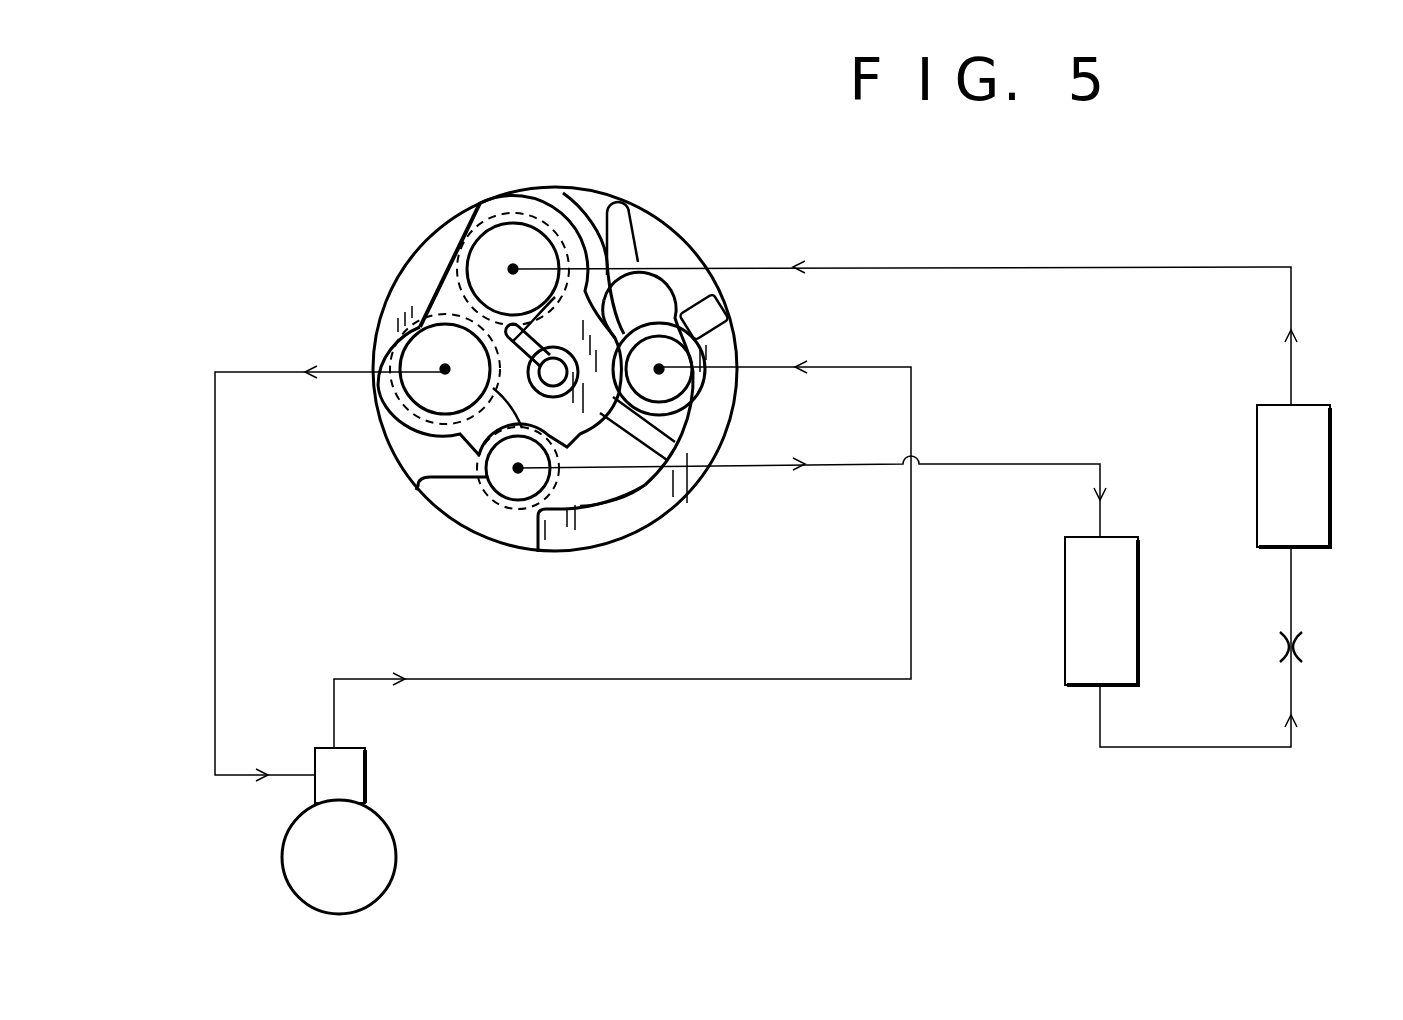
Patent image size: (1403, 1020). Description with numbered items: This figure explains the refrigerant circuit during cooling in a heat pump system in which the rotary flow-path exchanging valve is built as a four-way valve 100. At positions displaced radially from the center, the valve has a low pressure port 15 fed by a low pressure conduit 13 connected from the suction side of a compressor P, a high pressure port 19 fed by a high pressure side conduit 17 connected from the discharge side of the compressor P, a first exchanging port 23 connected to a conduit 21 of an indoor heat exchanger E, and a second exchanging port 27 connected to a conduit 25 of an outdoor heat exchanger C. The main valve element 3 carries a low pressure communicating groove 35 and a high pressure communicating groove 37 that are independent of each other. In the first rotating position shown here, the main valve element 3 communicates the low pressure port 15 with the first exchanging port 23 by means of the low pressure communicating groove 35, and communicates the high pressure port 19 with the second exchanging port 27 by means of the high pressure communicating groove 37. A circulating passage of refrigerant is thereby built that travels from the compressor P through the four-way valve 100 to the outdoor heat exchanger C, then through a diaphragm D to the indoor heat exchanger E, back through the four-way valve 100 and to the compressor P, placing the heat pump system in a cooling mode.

The main valve element 3 is at (648, 215).
The four-way valve 100 is at (721, 229).
The low pressure conduit 13 is at (215, 548).
The low pressure port 15 is at (432, 392).
The high pressure side conduit 17 is at (912, 395).
The high pressure port 19 is at (684, 354).
The conduit of indoor heat exchanger 21 is at (1032, 265).
The first exchanging port 23 is at (508, 232).
The conduit of outdoor heat exchanger 25 is at (1038, 462).
The second exchanging port 27 is at (527, 508).
The low pressure communicating groove 35 is at (450, 297).
The high pressure communicating groove 37 is at (630, 484).
The outdoor heat exchanger C is at (1101, 611).
The indoor heat exchanger E is at (1293, 476).
The diaphragm D is at (1303, 643).
The compressor P is at (339, 831).